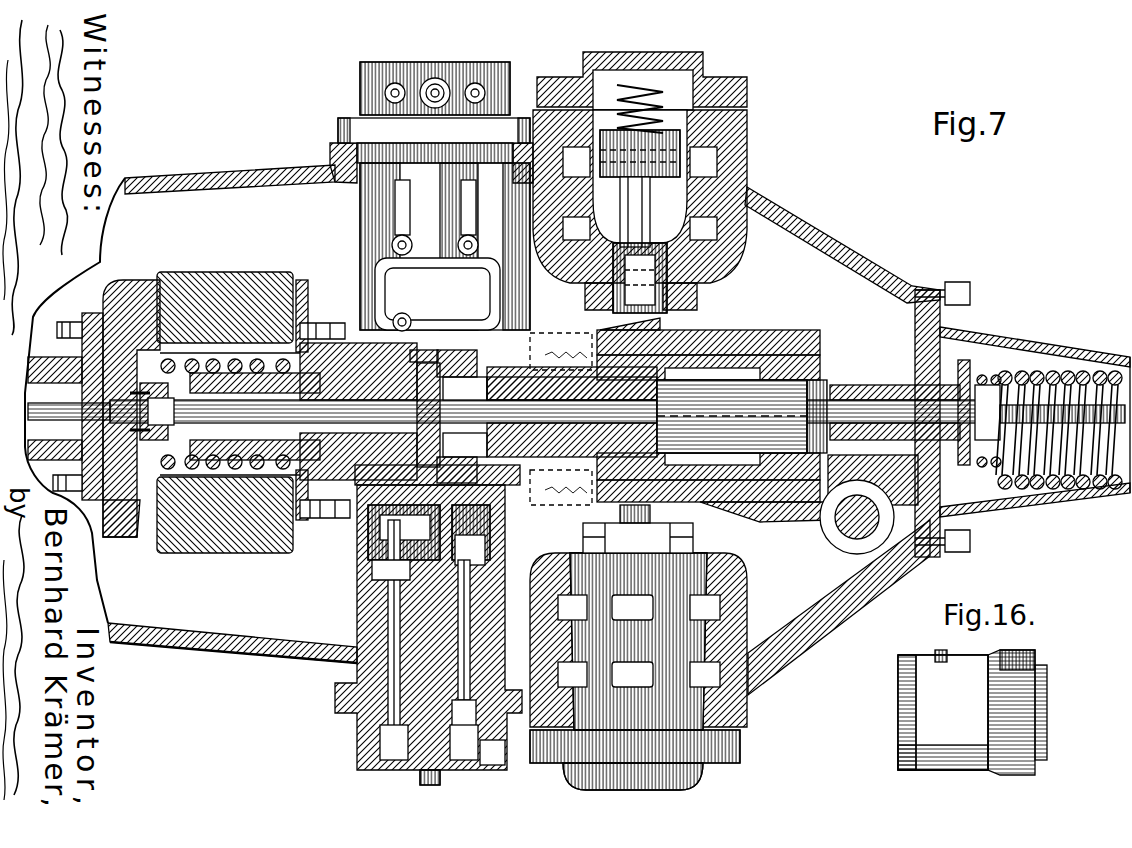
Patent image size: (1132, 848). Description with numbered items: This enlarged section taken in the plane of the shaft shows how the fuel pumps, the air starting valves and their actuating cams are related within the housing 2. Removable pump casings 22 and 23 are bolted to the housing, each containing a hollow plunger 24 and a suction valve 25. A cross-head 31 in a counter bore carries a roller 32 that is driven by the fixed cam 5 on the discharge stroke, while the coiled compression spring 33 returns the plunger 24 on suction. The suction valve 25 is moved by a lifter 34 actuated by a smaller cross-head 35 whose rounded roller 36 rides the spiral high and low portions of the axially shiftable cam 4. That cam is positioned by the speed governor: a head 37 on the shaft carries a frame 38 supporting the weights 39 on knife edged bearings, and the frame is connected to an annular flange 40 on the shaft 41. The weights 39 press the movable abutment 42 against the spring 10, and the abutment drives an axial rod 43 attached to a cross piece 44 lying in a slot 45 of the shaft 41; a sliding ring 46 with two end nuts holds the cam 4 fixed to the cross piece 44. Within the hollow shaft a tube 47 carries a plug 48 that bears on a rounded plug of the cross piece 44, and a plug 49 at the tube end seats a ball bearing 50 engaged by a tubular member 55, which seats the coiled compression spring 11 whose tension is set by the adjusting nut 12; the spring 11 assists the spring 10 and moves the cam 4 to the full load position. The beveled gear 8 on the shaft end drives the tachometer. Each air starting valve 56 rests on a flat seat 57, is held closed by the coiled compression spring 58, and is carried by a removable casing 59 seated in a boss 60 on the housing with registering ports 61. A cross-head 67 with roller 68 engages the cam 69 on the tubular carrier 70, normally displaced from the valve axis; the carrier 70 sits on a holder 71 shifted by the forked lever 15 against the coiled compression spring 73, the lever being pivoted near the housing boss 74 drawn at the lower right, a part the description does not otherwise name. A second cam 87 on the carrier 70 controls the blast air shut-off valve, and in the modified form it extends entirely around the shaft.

In FIG. 7, the housing 2 is at (238, 175).
In FIG. 7, the cam 4 is at (475, 350).
In FIG. 7, the cam 5 is at (380, 473).
In FIG. 7, the beveled gear 8 is at (968, 480).
In FIG. 7, the spring 10 is at (178, 455).
In FIG. 7, the coiled compression spring 11 is at (1037, 468).
In FIG. 7, the adjusting nut 12 is at (1090, 465).
In FIG. 7, the forked lever 15 is at (805, 515).
In FIG. 7, the pump casing 22 is at (360, 225).
In FIG. 7, the pump casing 23 is at (355, 600).
In FIG. 7, the plunger 24 is at (385, 734).
In FIG. 7, the suction valve 25 is at (505, 748).
In FIG. 7, the cross-head 31 is at (372, 550).
In FIG. 7, the roller 32 is at (375, 531).
In FIG. 7, the coiled compression spring 33 is at (372, 572).
In FIG. 7, the lifter 34 is at (470, 627).
In FIG. 7, the cross-head 35 is at (495, 530).
In FIG. 7, the roller 36 is at (492, 512).
In FIG. 7, the head 37 is at (90, 318).
In FIG. 7, the frame 38 is at (130, 280).
In FIG. 7, the weights 39 is at (222, 272).
In FIG. 7, the annular flange 40 is at (325, 322).
In FIG. 7, the shaft 41 is at (360, 375).
In FIG. 7, the movable abutment 42 is at (145, 412).
In FIG. 7, the rod 43 is at (325, 500).
In FIG. 7, the cross piece 44 is at (435, 420).
In FIG. 7, the slot 45 is at (465, 388).
In FIG. 7, the sliding ring 46 is at (478, 360).
In FIG. 7, the tube 47 is at (568, 395).
In FIG. 7, the plug 48 is at (475, 428).
In FIG. 7, the plug 49 is at (950, 385).
In FIG. 7, the ball bearing 50 is at (990, 468).
In FIG. 7, the tubular member 55 is at (997, 378).
In FIG. 7, the air starting valve 56 is at (682, 135).
In FIG. 7, the flat seat 57 is at (668, 180).
In FIG. 7, the coiled compression spring 58 is at (635, 80).
In FIG. 7, the removable casing 59 is at (725, 77).
In FIG. 7, the boss 60 is at (745, 235).
In FIG. 7, the ports 61 is at (705, 235).
In FIG. 7, the cross-head 67 is at (695, 265).
In FIG. 7, the roller 68 is at (620, 300).
In FIG. 7, the cam 69 is at (605, 330).
In FIG. 16, the cam 69 is at (1020, 656).
In FIG. 7, the carrier 70 is at (820, 340).
In FIG. 16, the carrier 70 is at (940, 655).
In FIG. 7, the holder 71 is at (758, 355).
In FIG. 7, the coiled compression spring 73 is at (570, 475).
In FIG. 7, the boss 74 is at (842, 545).
In FIG. 7, the cam 87 is at (775, 518).
In FIG. 16, the cam 87 is at (1017, 660).